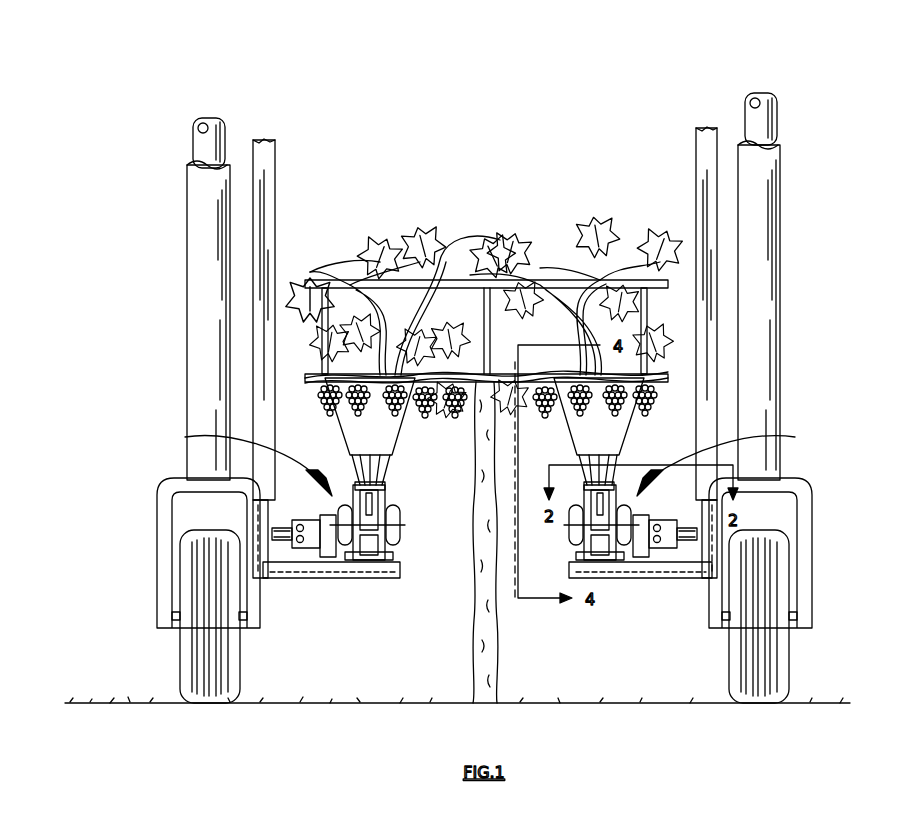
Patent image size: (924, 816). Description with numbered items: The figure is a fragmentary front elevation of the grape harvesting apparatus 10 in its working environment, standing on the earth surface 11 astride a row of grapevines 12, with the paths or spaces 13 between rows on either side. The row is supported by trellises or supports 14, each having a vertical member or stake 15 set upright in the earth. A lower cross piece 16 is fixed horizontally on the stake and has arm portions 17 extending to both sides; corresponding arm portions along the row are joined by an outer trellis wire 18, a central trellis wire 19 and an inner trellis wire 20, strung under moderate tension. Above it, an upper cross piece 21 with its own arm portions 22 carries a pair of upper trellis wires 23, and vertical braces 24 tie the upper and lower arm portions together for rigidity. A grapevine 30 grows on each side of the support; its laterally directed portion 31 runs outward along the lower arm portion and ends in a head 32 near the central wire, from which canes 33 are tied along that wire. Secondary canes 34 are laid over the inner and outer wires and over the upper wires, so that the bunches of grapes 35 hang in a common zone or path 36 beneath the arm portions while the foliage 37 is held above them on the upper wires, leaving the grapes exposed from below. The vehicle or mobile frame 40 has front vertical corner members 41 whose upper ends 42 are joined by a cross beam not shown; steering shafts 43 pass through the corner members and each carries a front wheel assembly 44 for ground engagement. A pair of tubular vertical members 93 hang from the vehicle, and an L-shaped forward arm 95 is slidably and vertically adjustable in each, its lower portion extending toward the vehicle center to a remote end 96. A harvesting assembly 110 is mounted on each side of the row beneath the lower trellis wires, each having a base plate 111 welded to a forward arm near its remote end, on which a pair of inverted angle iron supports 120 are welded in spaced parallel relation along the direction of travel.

The apparatus 10 is at (680, 76).
The earth surface 11 is at (603, 703).
The row of grapevines 12 is at (474, 620).
The paths or spaces 13 is at (135, 703).
The trellises or supports 14 is at (494, 262).
The vertical member or stake 15 is at (494, 594).
The lower cross piece 16 is at (492, 416).
The arm portions 17 is at (346, 420).
The outer trellis wire 18 is at (330, 368).
The central trellis wire 19 is at (362, 388).
The inner trellis wire 20 is at (415, 398).
The upper cross piece 21 is at (492, 266).
The arm portions 22 is at (420, 330).
The upper trellis wires 23 is at (343, 272).
The vertical braces 24 is at (322, 320).
The grapevine 30 is at (470, 500).
The upper, laterally directed portion 31 is at (494, 336).
The head 32 is at (382, 330).
The canes 33 is at (322, 362).
The secondary canes 34 is at (318, 282).
The bunches of grapes 35 is at (350, 395).
The common zone or path 36 is at (302, 372).
The foliage 37 is at (462, 258).
The vehicle or mobile frame 40 is at (786, 260).
The front vertical corner members 41 is at (205, 332).
The upper ends 42 is at (210, 186).
The steering shafts 43 is at (193, 152).
The front wheel assembly 44 is at (160, 548).
The vertical members 93 is at (262, 198).
The forward arm 95 is at (346, 566).
The remote ends 96 is at (398, 576).
The harvesting assembly 110 is at (487, 461).
The base plate 111 is at (358, 565).
The angle iron supports 120 is at (352, 548).